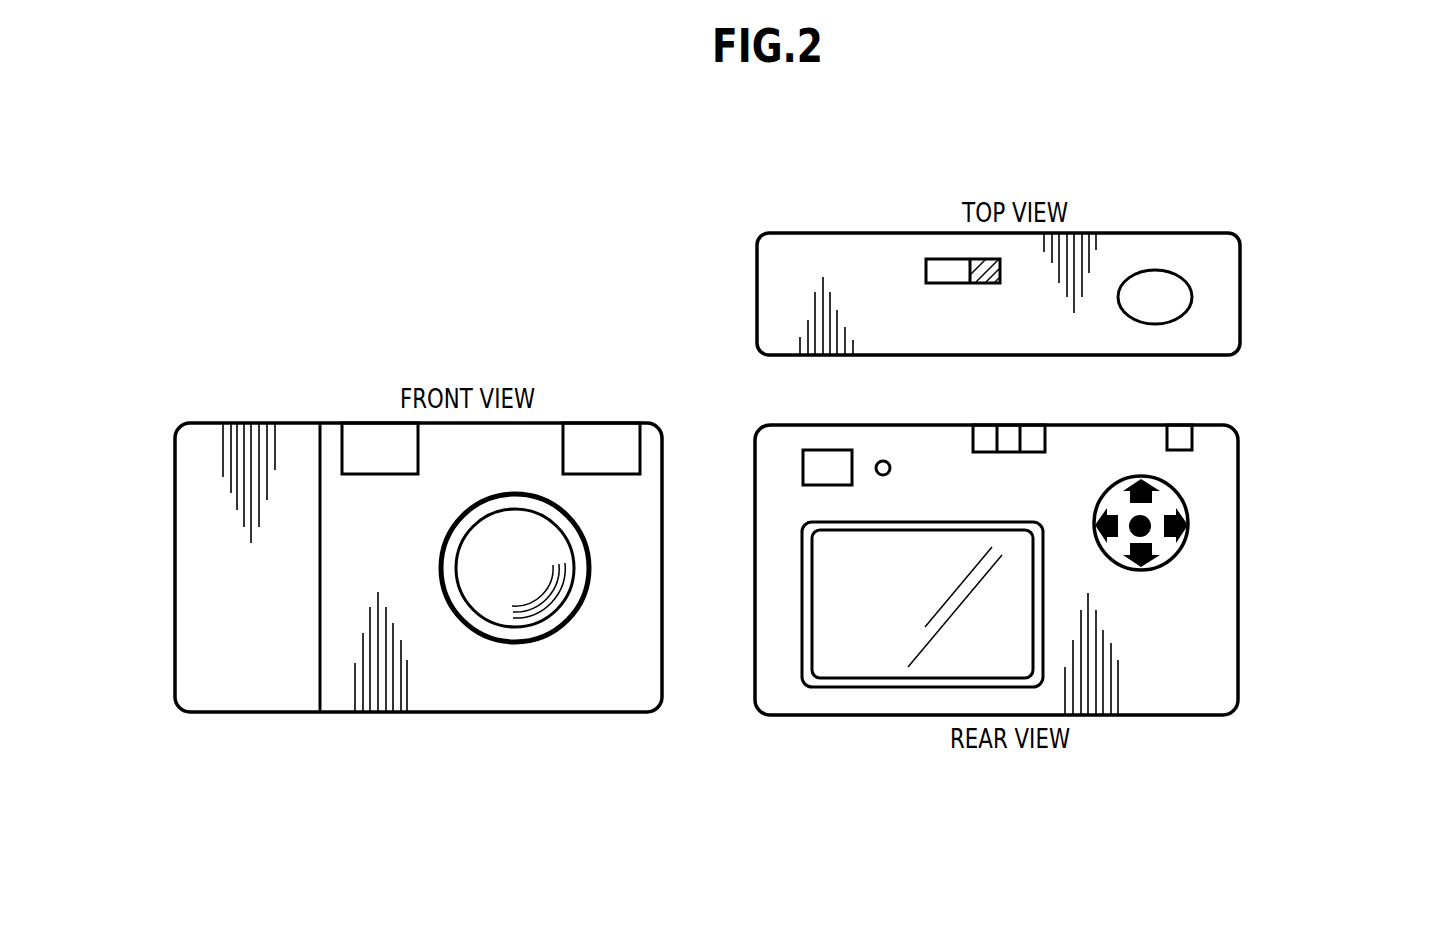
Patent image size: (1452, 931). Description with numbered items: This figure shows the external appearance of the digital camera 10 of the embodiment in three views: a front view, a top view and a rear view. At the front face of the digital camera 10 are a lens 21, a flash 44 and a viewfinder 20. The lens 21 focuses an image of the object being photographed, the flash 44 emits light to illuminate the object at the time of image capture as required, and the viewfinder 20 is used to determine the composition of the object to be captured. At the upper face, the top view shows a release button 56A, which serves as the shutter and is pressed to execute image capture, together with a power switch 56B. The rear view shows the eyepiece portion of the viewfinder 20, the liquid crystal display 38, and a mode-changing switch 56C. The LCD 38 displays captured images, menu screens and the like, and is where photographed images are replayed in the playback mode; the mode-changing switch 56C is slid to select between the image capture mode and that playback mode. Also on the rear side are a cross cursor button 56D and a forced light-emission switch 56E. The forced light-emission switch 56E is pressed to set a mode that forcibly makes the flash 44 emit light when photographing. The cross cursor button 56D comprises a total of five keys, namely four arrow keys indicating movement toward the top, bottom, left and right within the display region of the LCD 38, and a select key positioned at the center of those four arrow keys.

The digital camera 10 is at (345, 255).
The flash 44 is at (362, 437).
The viewfinder 20 is at (812, 460).
The lens 21 is at (505, 614).
The power switch 56B is at (950, 258).
The release button 56A is at (1157, 282).
The mode-changing switch 56C is at (1015, 428).
The forced light-emission switch 56E is at (1187, 437).
The cross cursor button 56D is at (1126, 570).
The liquid crystal display (LCD) 38 is at (923, 675).